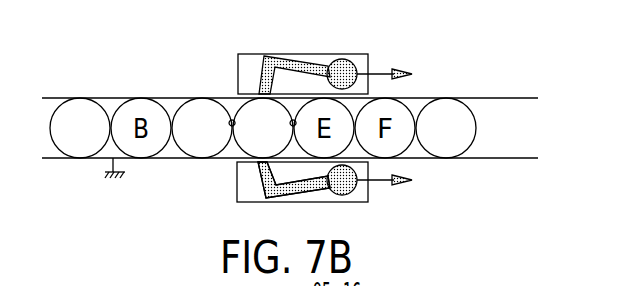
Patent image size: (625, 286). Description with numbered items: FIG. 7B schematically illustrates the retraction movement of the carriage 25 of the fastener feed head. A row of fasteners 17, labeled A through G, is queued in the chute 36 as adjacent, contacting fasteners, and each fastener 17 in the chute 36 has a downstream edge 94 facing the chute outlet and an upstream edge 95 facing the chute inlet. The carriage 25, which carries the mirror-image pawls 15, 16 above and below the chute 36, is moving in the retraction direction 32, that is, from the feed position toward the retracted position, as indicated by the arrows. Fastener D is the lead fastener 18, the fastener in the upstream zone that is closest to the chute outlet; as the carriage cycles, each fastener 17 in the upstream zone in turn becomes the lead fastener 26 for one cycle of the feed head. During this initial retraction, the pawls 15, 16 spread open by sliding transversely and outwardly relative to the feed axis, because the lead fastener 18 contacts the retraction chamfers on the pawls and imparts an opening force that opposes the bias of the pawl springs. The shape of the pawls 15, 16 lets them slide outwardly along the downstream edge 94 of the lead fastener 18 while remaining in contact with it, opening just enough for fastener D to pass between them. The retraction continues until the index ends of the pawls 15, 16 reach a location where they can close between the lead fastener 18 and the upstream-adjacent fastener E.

The pawl 15 is at (313, 192).
The pawl 16 is at (325, 64).
The fastener 17 is at (73, 112).
The lead fastener 18 is at (243, 147).
The carriage 25 is at (356, 54).
The lead fastener 26 is at (195, 156).
The retraction direction 32 is at (380, 72).
The chute 36 is at (497, 160).
The downstream edge 94 is at (235, 122).
The upstream edge 95 is at (288, 125).